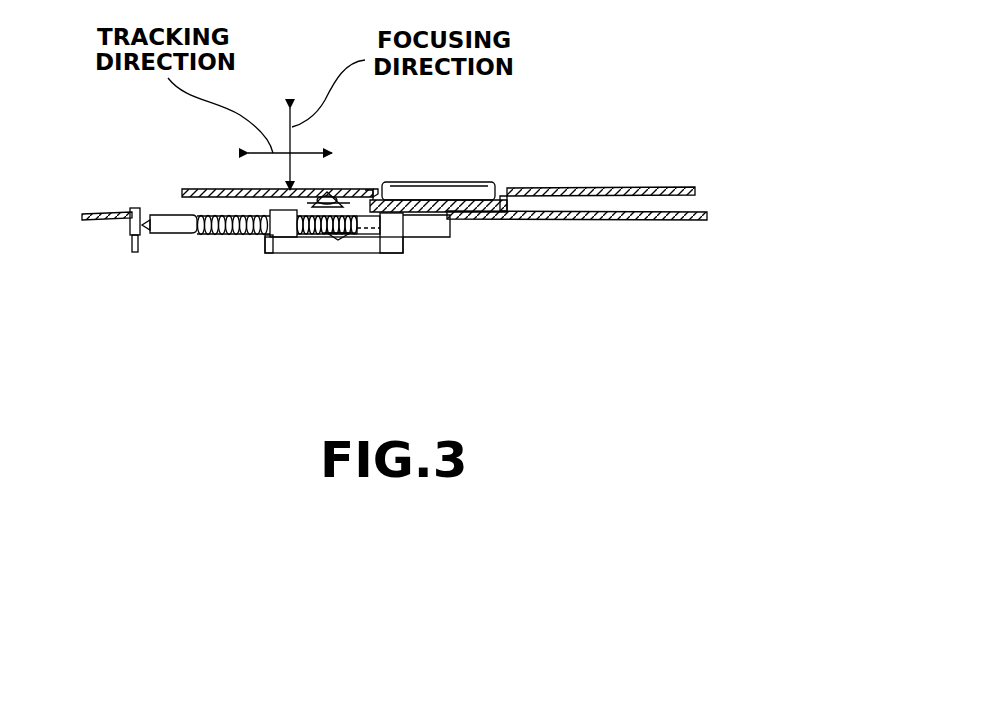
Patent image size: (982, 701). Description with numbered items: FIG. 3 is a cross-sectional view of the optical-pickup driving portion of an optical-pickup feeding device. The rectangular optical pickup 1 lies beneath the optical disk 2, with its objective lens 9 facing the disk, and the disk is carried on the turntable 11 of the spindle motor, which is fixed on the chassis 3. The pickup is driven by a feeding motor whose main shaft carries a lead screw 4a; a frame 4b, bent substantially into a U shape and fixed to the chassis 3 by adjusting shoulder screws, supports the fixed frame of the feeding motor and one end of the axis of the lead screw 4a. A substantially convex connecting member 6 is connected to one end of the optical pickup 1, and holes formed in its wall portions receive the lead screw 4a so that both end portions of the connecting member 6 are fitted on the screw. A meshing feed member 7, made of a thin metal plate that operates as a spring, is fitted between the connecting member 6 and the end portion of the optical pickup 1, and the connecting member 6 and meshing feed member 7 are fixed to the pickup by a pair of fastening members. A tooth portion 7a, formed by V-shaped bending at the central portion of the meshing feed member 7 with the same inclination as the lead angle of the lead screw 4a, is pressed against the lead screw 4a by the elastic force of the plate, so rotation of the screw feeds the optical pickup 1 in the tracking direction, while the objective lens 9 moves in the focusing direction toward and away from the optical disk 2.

The optical pickup 1 is at (287, 248).
The optical disk 2 is at (208, 188).
The chassis 3 is at (97, 220).
The lead screw 4a is at (220, 230).
The frame 4b is at (135, 252).
The connecting member 6 is at (395, 240).
The meshing feed member 7 is at (315, 240).
The tooth portion 7a is at (342, 242).
The objective lens 9 is at (345, 192).
The turntable 11 is at (467, 213).